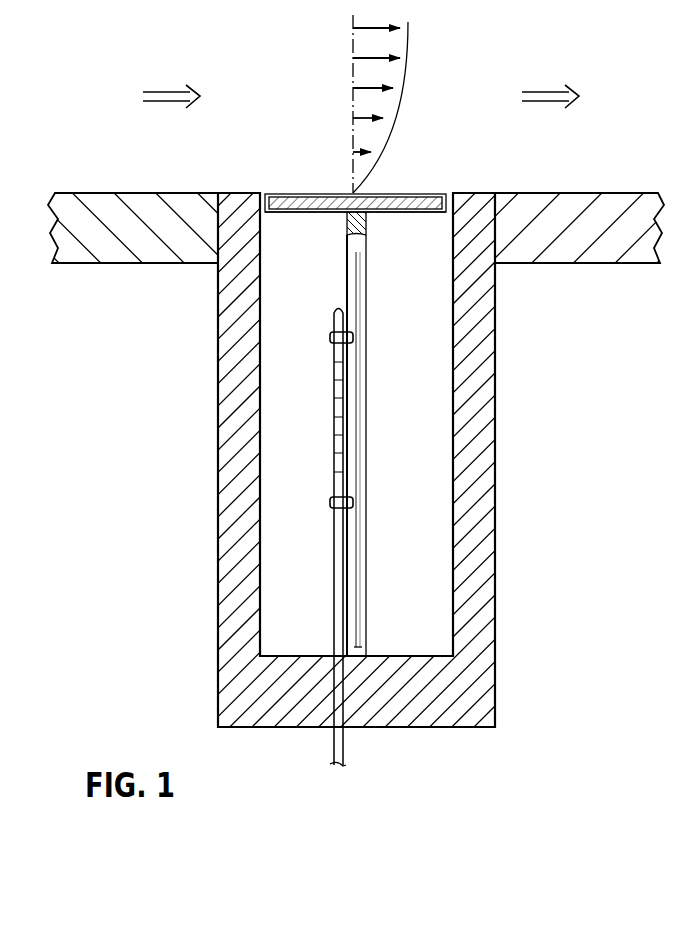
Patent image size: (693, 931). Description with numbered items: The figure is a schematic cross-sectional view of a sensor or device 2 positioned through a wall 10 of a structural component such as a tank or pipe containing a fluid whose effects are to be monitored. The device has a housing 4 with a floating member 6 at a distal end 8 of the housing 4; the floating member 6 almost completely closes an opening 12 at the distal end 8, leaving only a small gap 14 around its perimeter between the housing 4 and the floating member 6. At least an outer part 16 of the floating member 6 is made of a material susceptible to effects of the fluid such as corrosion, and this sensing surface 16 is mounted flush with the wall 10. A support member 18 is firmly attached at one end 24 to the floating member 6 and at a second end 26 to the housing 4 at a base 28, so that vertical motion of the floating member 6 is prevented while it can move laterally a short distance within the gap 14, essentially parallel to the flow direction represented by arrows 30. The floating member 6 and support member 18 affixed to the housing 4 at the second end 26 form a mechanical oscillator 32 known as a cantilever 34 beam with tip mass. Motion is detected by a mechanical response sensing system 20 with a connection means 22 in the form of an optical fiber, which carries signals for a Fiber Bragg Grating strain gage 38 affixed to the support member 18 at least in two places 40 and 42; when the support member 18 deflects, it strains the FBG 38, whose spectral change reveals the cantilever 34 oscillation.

The sensor or device 2 is at (163, 614).
The housing 4 is at (218, 413).
The floating member 6 is at (305, 212).
The distal end 8 is at (238, 193).
The wall 10 is at (160, 193).
The opening 12 is at (266, 217).
The gap 14 is at (262, 193).
The outer part 16 is at (320, 194).
The support member 18 is at (368, 407).
The mechanical response sensing system 20 is at (332, 533).
The connection means 22 is at (334, 751).
The one end 24 is at (368, 220).
The second end 26 is at (361, 646).
The base 28 is at (482, 685).
The arrows 30 is at (353, 60).
The mechanical oscillator 32 is at (399, 190).
The cantilever 34 is at (400, 171).
The Fiber Bragg Grating strain gage 38 is at (334, 407).
The place 40 is at (354, 337).
The place 42 is at (354, 503).